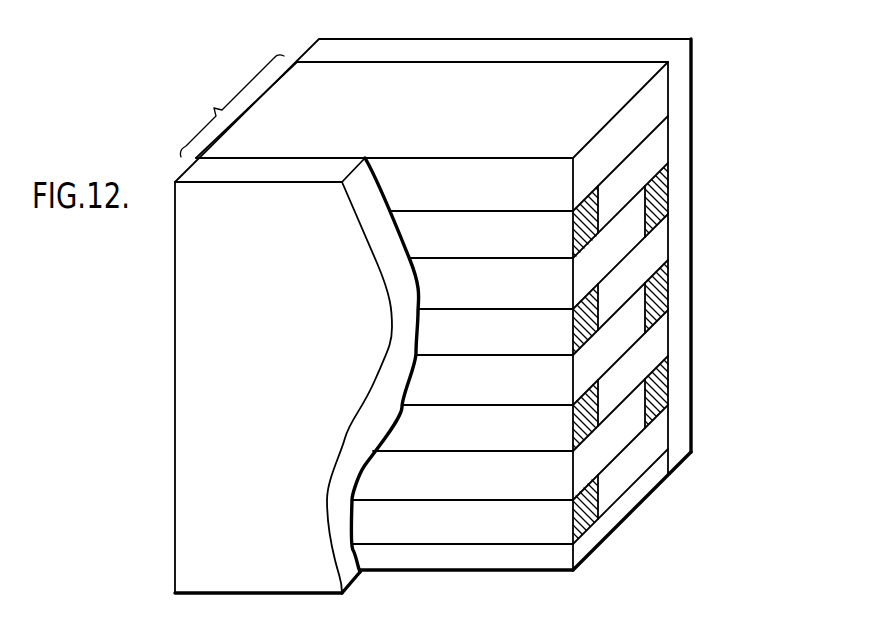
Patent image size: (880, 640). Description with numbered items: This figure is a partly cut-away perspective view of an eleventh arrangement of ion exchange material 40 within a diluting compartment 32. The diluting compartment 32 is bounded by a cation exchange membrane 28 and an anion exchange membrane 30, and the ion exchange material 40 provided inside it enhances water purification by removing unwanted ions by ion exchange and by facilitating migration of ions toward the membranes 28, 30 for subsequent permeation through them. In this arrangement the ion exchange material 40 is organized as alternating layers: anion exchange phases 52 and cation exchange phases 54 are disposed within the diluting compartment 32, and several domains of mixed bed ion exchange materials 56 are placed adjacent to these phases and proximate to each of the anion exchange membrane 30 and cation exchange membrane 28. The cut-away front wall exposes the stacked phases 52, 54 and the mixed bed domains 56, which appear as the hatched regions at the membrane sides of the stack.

The cation exchange membrane 28 is at (198, 515).
The anion exchange membrane 30 is at (580, 61).
The diluting compartment 32 is at (232, 106).
The ion exchange material 40 is at (519, 574).
The anion exchange phases 52 is at (653, 154).
The cation exchange phases 54 is at (633, 233).
The domains of mixed bed ion exchange materials 56 is at (442, 228).